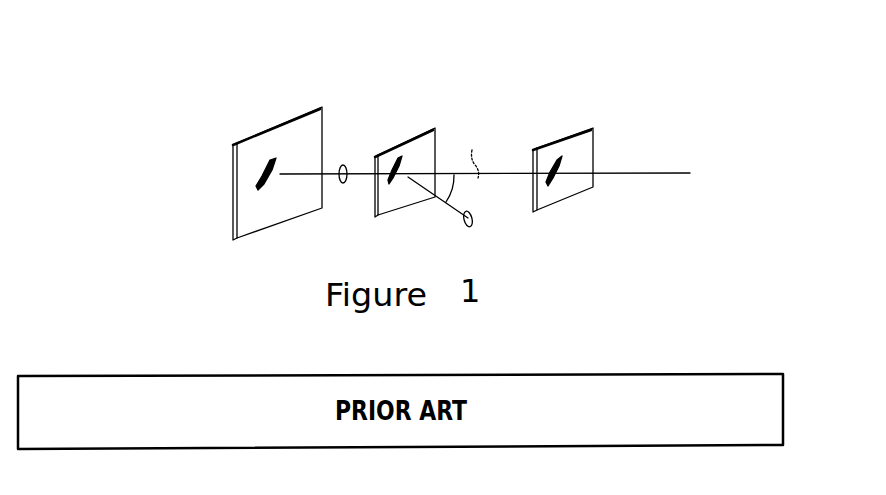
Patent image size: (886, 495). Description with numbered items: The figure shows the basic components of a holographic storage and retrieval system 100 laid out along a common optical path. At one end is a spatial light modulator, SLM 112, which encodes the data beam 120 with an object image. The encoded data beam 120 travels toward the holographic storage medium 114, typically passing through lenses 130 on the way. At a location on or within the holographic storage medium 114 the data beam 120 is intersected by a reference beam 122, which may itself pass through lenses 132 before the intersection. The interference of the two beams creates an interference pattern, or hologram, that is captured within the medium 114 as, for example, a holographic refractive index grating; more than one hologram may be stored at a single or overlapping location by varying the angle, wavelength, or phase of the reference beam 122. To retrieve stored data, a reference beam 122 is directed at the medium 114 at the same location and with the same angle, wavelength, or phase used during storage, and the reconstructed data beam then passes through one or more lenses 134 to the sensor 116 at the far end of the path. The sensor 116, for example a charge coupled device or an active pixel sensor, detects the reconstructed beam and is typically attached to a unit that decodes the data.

The holographic system 100 is at (401, 98).
The SLM 112 is at (583, 120).
The holographic storage medium 114 is at (376, 218).
The sensor 116 is at (323, 108).
The data beam 120 is at (628, 176).
The reference beam 122 is at (478, 222).
The lenses 130 is at (483, 155).
The lenses 132 is at (471, 211).
The lenses 134 is at (347, 164).